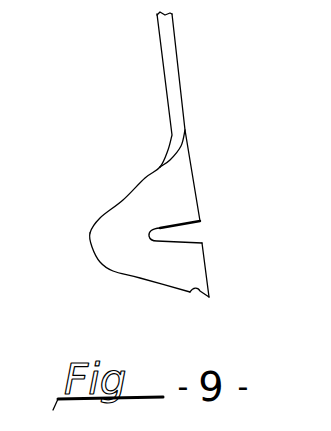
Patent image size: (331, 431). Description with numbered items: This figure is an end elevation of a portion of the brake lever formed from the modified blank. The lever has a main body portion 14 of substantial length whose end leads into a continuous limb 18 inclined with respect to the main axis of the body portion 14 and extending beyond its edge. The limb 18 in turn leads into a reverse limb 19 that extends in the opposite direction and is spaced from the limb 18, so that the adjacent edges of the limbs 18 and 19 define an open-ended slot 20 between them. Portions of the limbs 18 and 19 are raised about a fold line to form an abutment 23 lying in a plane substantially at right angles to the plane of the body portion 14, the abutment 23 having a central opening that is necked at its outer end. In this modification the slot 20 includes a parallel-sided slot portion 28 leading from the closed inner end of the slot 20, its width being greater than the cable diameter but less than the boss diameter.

The main body portion 14 is at (173, 50).
The limb 18 is at (145, 198).
The reverse limb 19 is at (173, 275).
The open ended slot 20 is at (180, 236).
The abutment 23 is at (102, 253).
The parallel sided slot portion 28 is at (158, 239).